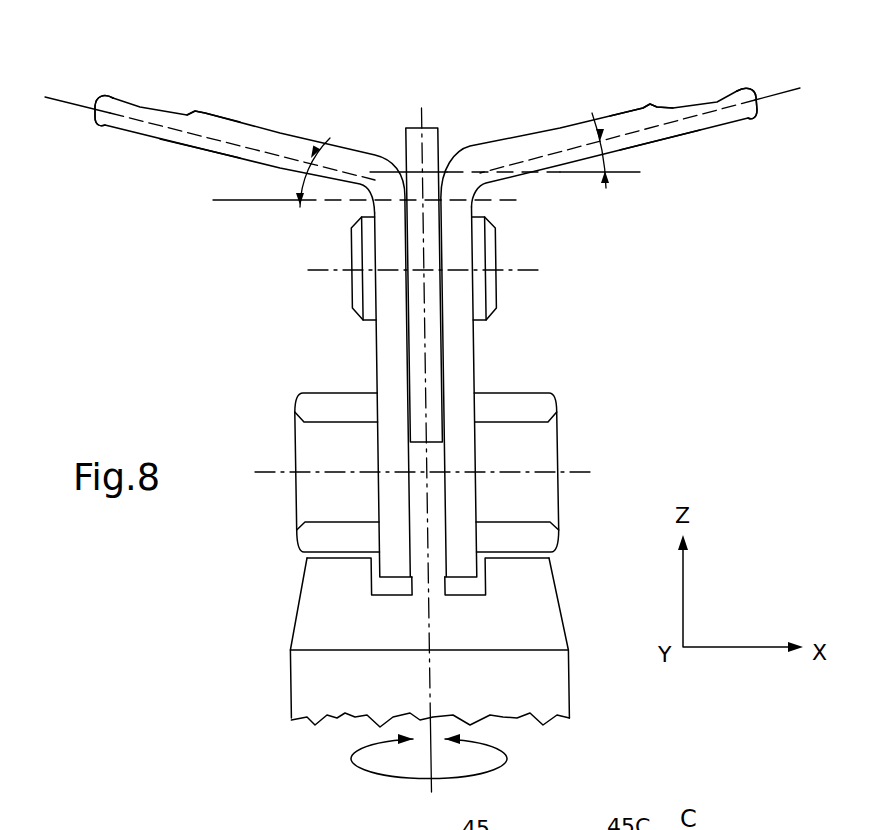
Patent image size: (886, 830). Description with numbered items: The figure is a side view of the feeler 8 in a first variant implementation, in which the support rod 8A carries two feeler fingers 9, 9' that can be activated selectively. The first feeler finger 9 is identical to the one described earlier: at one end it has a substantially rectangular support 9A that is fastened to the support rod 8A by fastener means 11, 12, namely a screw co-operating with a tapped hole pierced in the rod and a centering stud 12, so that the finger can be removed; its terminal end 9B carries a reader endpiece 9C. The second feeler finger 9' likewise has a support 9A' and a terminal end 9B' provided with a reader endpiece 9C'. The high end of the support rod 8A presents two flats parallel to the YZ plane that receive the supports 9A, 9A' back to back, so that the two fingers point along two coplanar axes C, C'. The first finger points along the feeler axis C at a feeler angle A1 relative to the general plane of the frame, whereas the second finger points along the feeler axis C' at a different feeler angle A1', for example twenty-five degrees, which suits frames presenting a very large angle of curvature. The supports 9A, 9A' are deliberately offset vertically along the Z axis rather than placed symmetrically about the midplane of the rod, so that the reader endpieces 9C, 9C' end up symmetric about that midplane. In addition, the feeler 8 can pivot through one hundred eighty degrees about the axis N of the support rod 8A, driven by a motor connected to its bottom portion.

The feeler 8 is at (436, 110).
The support rod 8A is at (303, 665).
The feeler finger 9 is at (599, 106).
The second feeler finger 9' is at (250, 109).
The support 9A is at (490, 388).
The support 9A' is at (359, 388).
The terminal end 9B is at (655, 155).
The terminal end 9B' is at (198, 159).
The reader endpiece 9C is at (753, 137).
The reader endpiece 9C' is at (102, 144).
The fastener means 11 is at (560, 413).
The centering stud 12 is at (497, 300).
The feeler axis C is at (640, 101).
The feeler axis C' is at (210, 107).
The feeler angle A1 is at (509, 159).
The feeler angle A1' is at (365, 185).
The axis of the support rod N is at (432, 770).